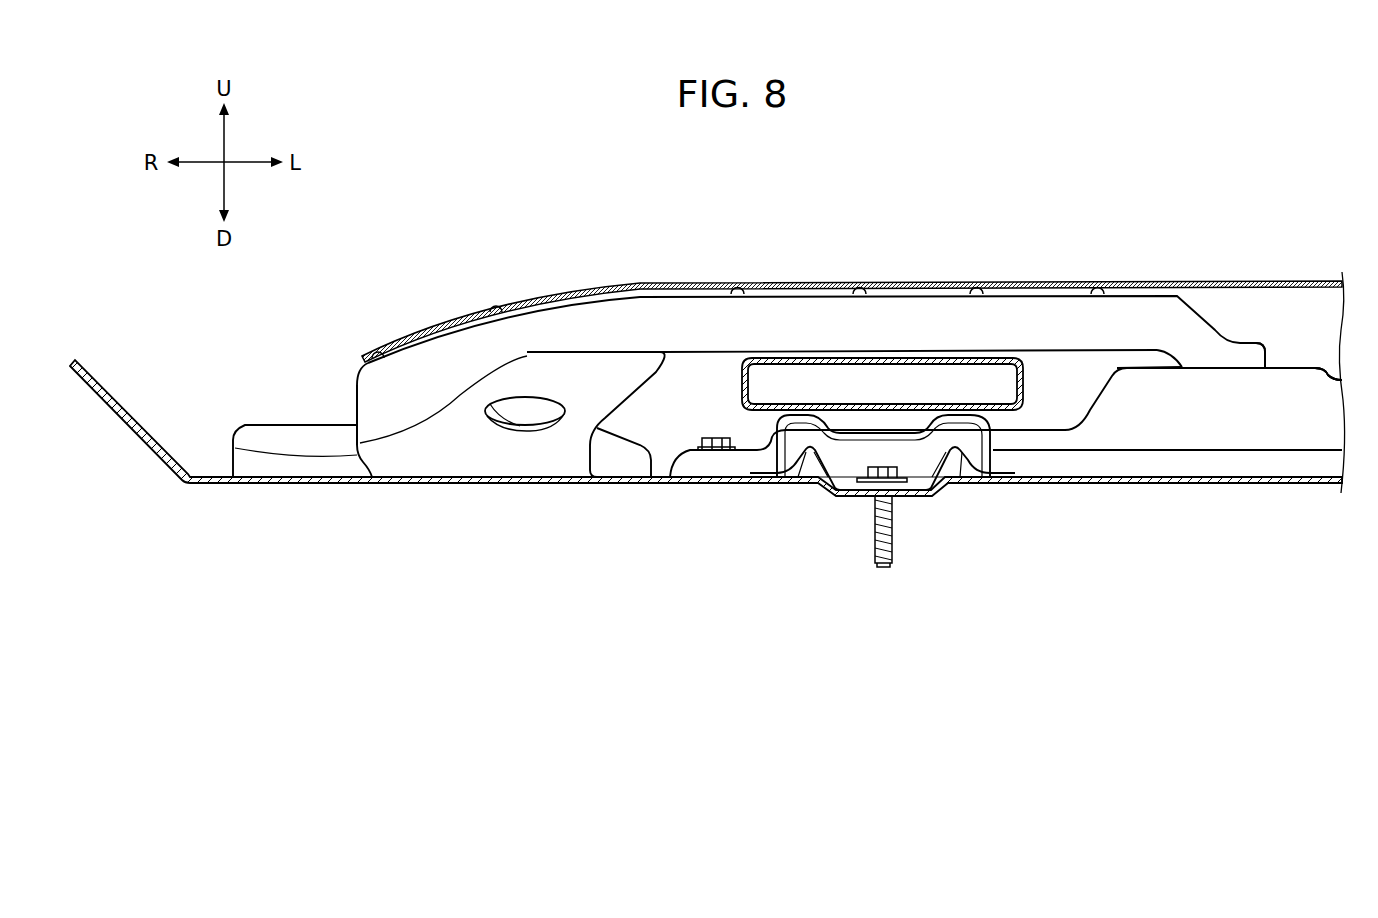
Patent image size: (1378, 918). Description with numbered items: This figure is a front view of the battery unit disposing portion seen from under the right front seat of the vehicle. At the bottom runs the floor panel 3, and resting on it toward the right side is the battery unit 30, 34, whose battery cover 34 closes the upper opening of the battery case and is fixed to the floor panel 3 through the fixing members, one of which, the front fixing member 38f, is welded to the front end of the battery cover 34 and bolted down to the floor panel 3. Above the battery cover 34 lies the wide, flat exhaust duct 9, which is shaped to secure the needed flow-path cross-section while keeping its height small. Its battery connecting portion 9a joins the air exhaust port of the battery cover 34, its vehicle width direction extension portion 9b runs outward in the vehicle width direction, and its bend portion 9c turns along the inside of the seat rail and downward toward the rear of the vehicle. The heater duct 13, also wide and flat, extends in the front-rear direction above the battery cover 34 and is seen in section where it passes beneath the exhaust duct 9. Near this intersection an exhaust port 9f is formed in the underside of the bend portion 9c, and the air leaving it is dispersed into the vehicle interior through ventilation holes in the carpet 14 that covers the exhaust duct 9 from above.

The floor panel 3 is at (1077, 466).
The exhaust duct 9 is at (487, 346).
The battery connecting portion 9a is at (1262, 340).
The vehicle width direction extension portion 9b is at (914, 320).
The bend portion 9c is at (430, 372).
The exhaust port 9f is at (519, 426).
The heater duct 13 is at (795, 356).
The carpet 14 is at (646, 285).
The seat 30 is at (1302, 368).
The battery cover 34 is at (1306, 360).
The front fixing member 38f is at (900, 453).